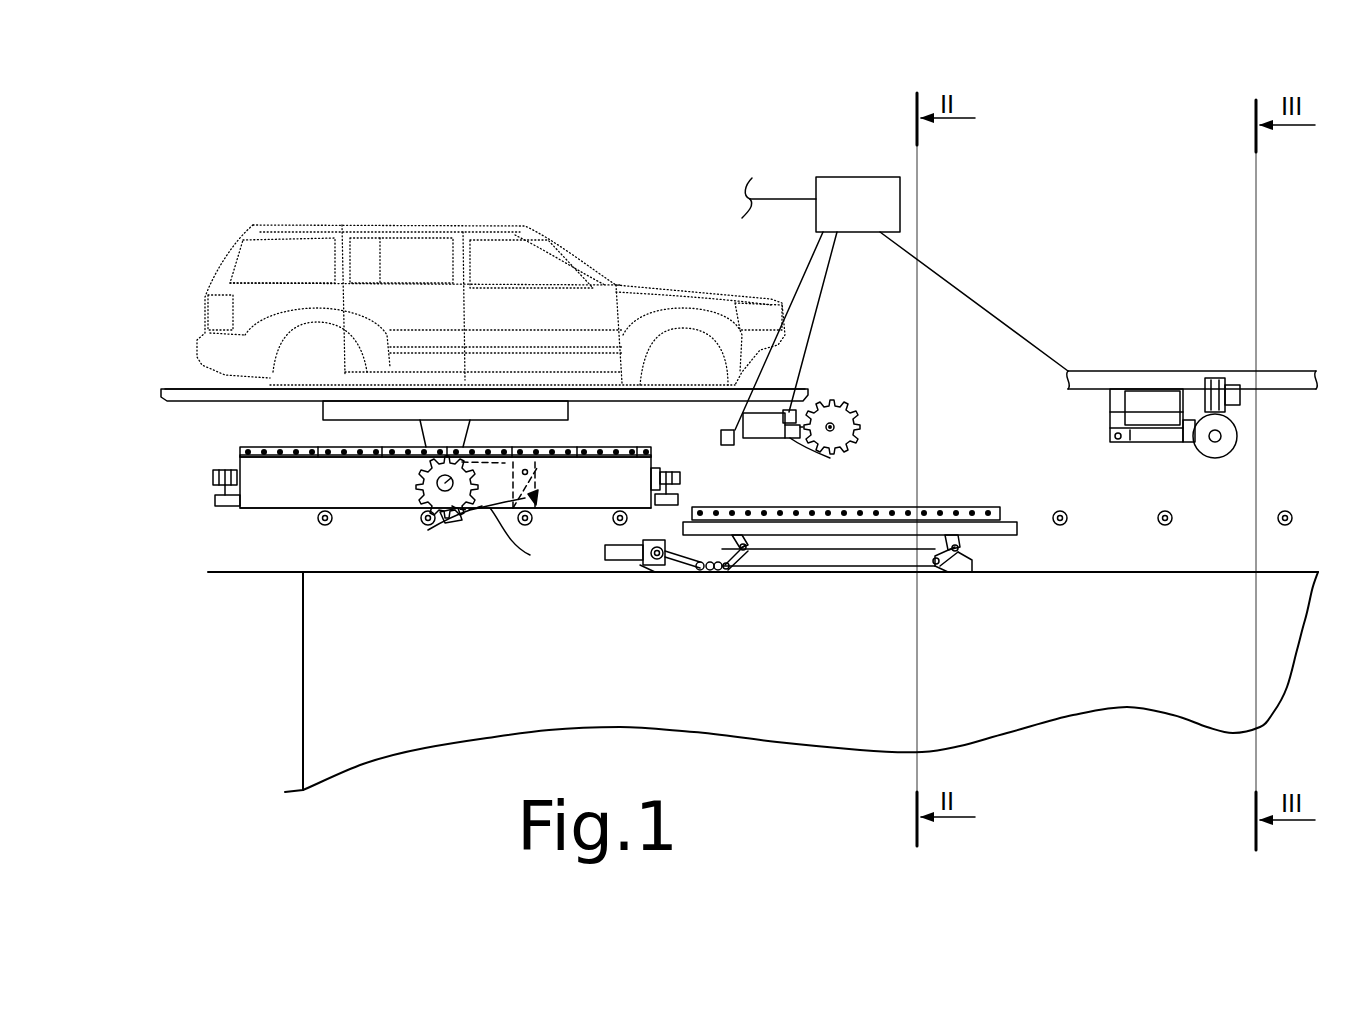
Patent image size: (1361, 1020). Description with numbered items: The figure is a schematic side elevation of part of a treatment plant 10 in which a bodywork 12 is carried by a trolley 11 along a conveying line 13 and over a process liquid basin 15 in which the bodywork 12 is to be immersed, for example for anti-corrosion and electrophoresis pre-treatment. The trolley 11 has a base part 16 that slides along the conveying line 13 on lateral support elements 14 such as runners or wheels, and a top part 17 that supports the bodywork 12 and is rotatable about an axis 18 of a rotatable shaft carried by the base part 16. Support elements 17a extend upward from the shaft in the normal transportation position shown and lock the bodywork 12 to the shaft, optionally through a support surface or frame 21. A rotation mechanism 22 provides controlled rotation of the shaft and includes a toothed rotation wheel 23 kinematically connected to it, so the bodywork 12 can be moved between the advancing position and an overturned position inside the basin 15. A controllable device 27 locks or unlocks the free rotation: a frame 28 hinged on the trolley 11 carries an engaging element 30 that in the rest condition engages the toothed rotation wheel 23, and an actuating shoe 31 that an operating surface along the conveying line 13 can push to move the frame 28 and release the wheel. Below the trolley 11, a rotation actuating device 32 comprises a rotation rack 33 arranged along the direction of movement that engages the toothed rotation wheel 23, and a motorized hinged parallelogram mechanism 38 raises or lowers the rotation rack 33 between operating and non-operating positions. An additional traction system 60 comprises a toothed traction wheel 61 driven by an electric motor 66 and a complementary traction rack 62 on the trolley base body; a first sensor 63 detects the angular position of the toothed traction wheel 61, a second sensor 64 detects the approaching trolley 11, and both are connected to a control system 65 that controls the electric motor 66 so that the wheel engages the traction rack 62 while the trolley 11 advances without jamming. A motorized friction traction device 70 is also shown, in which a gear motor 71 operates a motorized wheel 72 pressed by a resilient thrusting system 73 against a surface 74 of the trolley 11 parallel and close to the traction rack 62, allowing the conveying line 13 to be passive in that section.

The plant 10 is at (414, 126).
The trolley 11 is at (176, 503).
The bodywork 12 is at (350, 240).
The conveying line 13 is at (305, 528).
The lateral support elements 14 is at (265, 510).
The process liquid basin 15 is at (430, 745).
The base part 16 is at (253, 483).
The top part 17 is at (174, 372).
The support elements 17a is at (435, 437).
The axis 18 is at (437, 488).
The support surface or frame 21 is at (207, 392).
The rotation mechanism 22 is at (467, 538).
The toothed rotation wheel 23 is at (408, 500).
The controllable device 27 is at (520, 500).
The frame 28 is at (495, 508).
The engaging element 30 is at (465, 441).
The actuating shoe 31 is at (455, 522).
The rotation actuating device 32 is at (952, 494).
The rotation rack 33 is at (985, 510).
The parallelogram mechanism 38 is at (992, 556).
The additional traction system 60 is at (972, 276).
The toothed traction wheel 61 is at (840, 398).
The traction rack 62 is at (618, 453).
The first sensor 63 is at (833, 455).
The second sensor 64 is at (722, 446).
The control system 65 is at (849, 192).
The electric motor 66 is at (757, 443).
The motorized friction traction device 70 is at (1186, 348).
The gear motor 71 is at (1242, 395).
The motorized wheel 72 is at (1207, 455).
The resilient thrusting system 73 is at (1160, 395).
The surface 74 is at (254, 451).